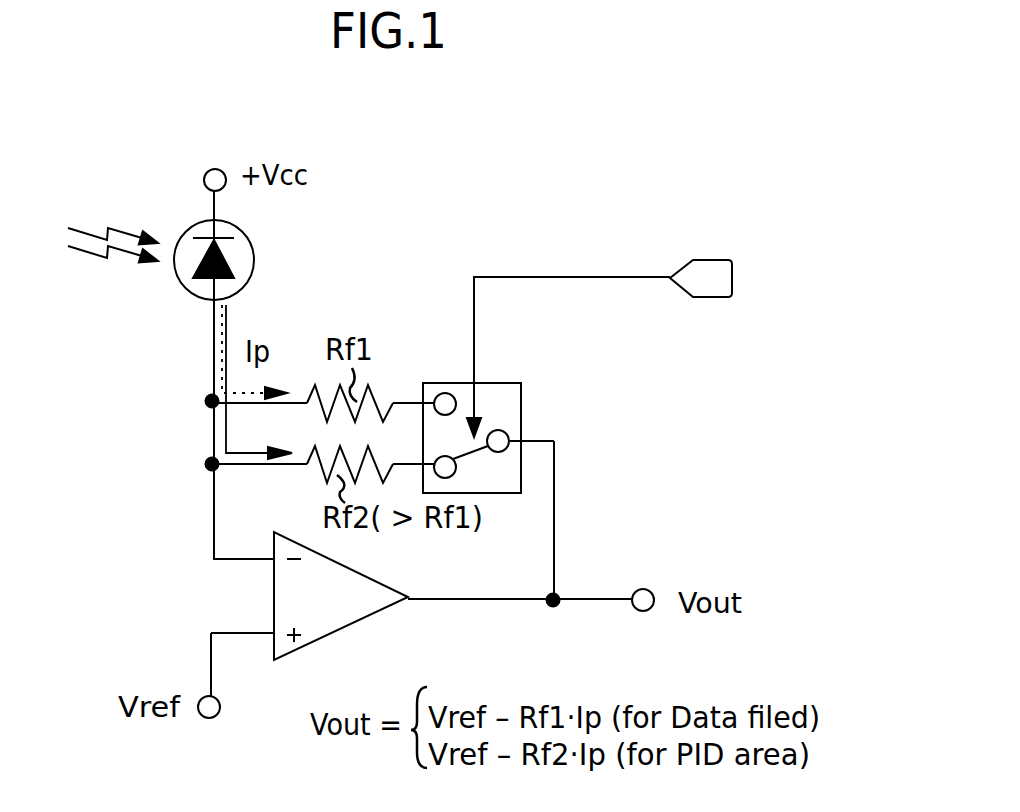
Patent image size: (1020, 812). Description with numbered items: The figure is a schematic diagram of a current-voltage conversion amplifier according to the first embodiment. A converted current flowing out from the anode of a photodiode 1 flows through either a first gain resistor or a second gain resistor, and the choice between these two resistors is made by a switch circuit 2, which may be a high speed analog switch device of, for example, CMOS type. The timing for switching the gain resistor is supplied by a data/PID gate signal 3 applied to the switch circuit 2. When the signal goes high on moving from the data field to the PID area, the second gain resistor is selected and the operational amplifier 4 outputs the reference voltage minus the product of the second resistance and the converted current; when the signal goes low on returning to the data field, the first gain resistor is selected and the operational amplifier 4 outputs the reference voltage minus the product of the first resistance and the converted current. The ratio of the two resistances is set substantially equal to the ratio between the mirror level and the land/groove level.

The photodiode 1 is at (270, 275).
The switch circuit 2 is at (521, 409).
The data/PID gate signal 3 is at (520, 277).
The operational amplifier 4 is at (392, 607).